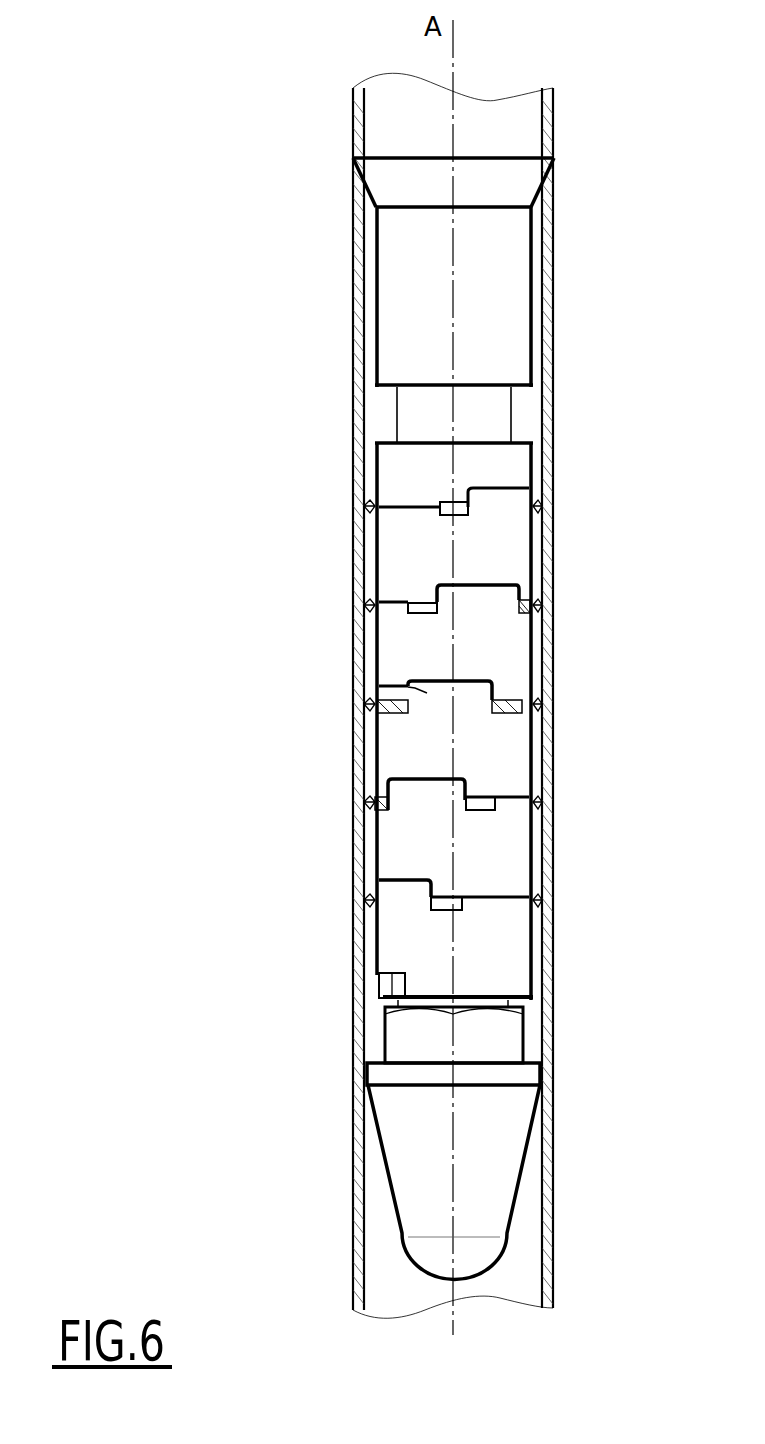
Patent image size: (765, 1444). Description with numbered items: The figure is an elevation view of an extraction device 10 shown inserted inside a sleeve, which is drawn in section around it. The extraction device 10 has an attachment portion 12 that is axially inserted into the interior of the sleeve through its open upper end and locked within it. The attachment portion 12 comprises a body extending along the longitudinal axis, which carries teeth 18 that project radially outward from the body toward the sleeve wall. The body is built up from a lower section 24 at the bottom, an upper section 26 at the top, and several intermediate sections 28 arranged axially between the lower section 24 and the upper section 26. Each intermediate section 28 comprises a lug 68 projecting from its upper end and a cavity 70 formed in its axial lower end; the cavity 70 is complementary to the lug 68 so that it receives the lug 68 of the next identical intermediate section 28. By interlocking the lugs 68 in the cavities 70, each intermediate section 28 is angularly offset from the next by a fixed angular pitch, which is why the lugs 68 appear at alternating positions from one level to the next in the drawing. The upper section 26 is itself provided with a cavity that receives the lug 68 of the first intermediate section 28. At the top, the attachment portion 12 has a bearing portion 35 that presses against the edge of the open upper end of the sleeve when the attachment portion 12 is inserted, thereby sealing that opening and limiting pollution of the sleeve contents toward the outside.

The extraction device 10 is at (330, 423).
The attachment portion 12 is at (337, 1075).
The tooth 18 is at (545, 505).
The lower section 24 is at (500, 1172).
The upper section 26 is at (520, 469).
The intermediate section 28 is at (520, 558).
The bearing portion 35 is at (534, 164).
The lug 68 is at (440, 584).
The cavity 70 is at (434, 681).